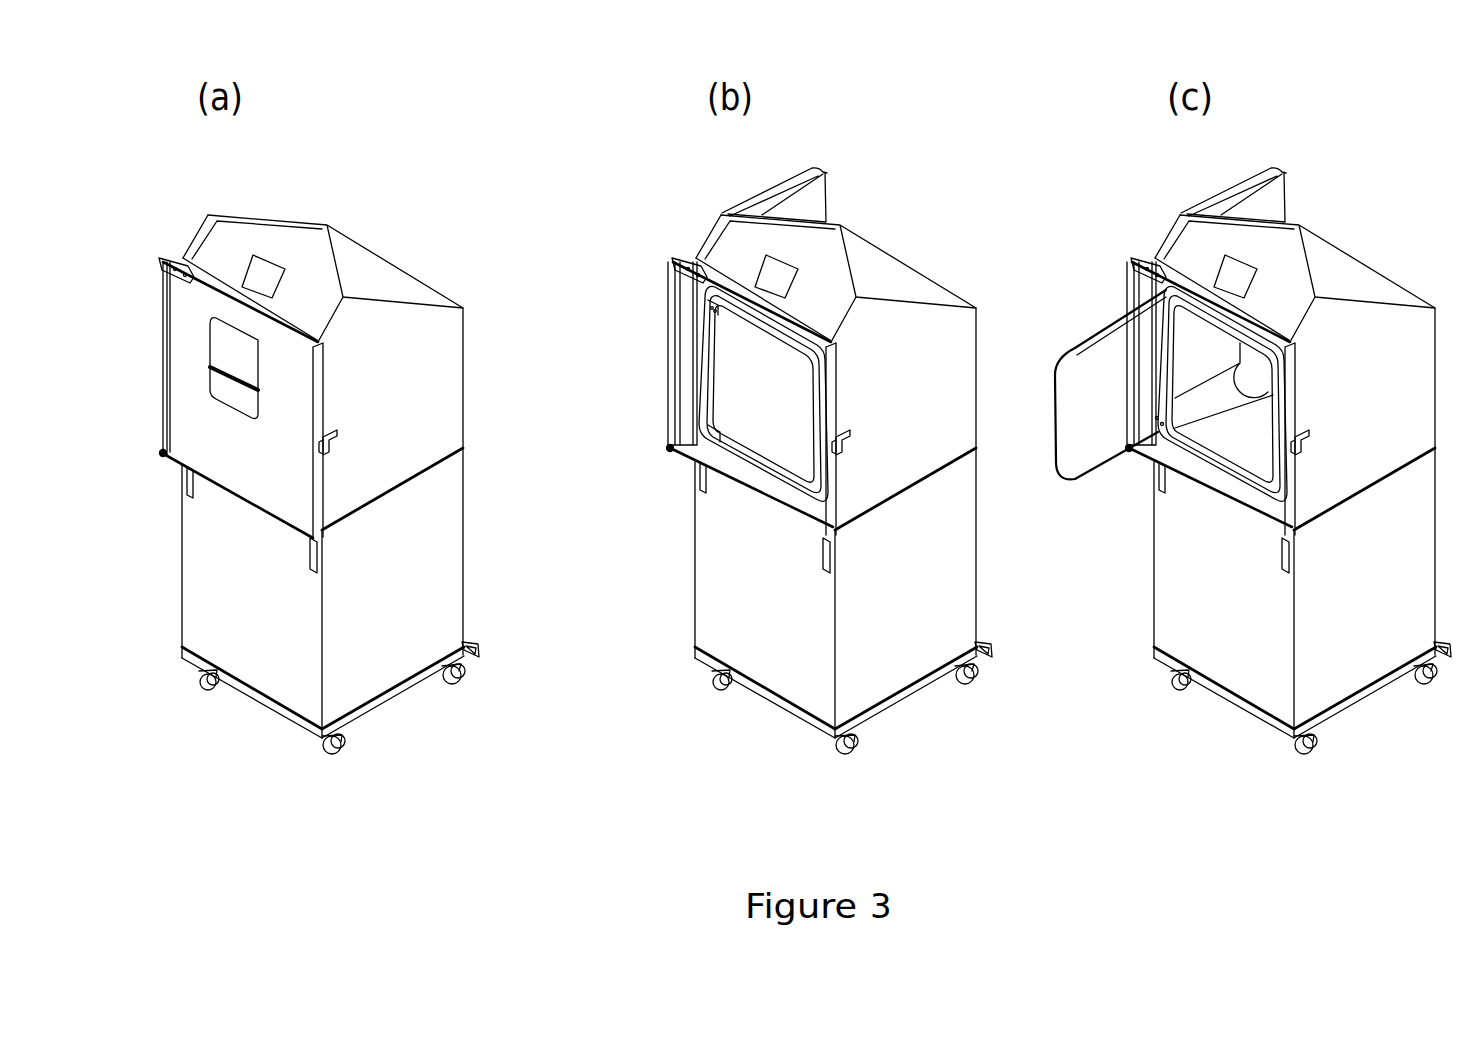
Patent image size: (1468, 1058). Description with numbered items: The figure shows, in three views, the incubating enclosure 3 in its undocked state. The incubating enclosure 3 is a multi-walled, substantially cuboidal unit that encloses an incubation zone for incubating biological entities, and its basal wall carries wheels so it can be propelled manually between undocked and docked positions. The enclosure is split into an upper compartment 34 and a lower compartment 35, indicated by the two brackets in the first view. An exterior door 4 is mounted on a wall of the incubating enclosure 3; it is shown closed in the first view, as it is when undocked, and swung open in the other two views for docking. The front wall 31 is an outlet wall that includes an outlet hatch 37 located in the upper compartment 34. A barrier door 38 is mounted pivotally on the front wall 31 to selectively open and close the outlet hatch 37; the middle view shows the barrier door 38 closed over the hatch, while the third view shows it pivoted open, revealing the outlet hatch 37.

The incubating enclosure 3 is at (520, 442).
The exterior door 4 is at (185, 376).
The front wall 31 is at (218, 573).
The upper compartment 34 is at (495, 216).
The lower compartment 35 is at (495, 453).
The outlet hatch 37 is at (1237, 437).
The barrier door 38 is at (735, 372).